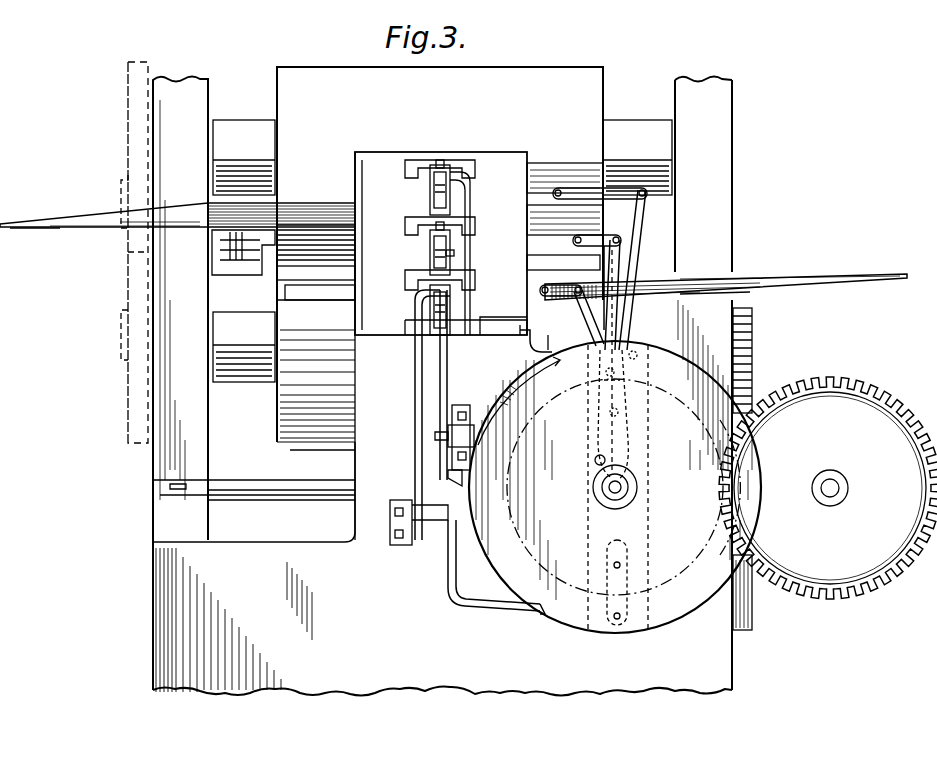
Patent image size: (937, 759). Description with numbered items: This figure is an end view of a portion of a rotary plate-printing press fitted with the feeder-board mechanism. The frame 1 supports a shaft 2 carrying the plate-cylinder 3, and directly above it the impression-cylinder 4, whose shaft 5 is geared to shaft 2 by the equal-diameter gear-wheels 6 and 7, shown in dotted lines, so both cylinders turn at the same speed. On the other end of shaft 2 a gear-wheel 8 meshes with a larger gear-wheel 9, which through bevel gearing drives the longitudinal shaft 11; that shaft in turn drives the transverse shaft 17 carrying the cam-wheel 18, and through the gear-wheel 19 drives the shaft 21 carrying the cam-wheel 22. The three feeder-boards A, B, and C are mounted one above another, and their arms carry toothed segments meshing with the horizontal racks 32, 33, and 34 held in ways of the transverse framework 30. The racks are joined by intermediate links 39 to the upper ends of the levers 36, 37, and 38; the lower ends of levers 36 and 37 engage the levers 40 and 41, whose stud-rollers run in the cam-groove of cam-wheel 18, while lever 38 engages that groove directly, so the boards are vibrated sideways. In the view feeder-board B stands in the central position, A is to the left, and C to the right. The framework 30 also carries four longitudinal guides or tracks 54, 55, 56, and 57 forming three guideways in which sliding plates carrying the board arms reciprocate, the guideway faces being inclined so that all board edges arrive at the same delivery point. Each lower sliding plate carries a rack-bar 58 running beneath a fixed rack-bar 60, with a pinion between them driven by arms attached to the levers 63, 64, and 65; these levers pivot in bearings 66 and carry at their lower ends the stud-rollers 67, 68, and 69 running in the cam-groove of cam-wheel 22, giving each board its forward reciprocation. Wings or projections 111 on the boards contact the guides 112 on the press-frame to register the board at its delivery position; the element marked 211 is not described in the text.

The frame 1 is at (442, 386).
The shaft 2 is at (212, 350).
The plate-cylinder 3 is at (316, 386).
The impression-cylinder 4 is at (328, 136).
The shaft 5 is at (213, 153).
The gear-wheel 6 is at (128, 292).
The gear-wheel 7 is at (128, 112).
The gear-wheel 8 is at (752, 328).
The gear-wheel 9 is at (752, 402).
The shaft 11 is at (830, 480).
The transverse shaft 17 is at (228, 484).
The cam-wheel 18 is at (638, 352).
The gear-wheel 19 is at (828, 488).
The shaft 21 is at (609, 487).
The cam-wheel 22 is at (555, 560).
The transverse framework 30 is at (441, 243).
The horizontal rack 32 is at (538, 190).
The horizontal rack 33 is at (538, 232).
The horizontal rack 34 is at (320, 292).
The lever 36 is at (642, 214).
The lever 37 is at (617, 322).
The lever 38 is at (578, 336).
The intermediate link 39 is at (606, 236).
The lever 40 is at (632, 374).
The lever 41 is at (610, 546).
The longitudinal guide or track 54 is at (405, 165).
The longitudinal guide or track 55 is at (405, 222).
The longitudinal guide or track 56 is at (405, 280).
The longitudinal guide or track 57 is at (405, 326).
The rack-bar 58 is at (448, 198).
The rack-bar 60 is at (440, 160).
The lever 63 is at (471, 224).
The lever 64 is at (415, 374).
The lever 65 is at (447, 385).
The bearing 66 is at (518, 332).
The stud-roller 67 is at (524, 392).
The stud-roller 68 is at (543, 612).
The stud-roller 69 is at (462, 480).
The wing or projection 111 is at (306, 251).
The guide 112 is at (648, 258).
The arm end 211 is at (773, 286).
The feeder-board A is at (97, 218).
The feeder-board B is at (438, 267).
The feeder-board C is at (760, 282).